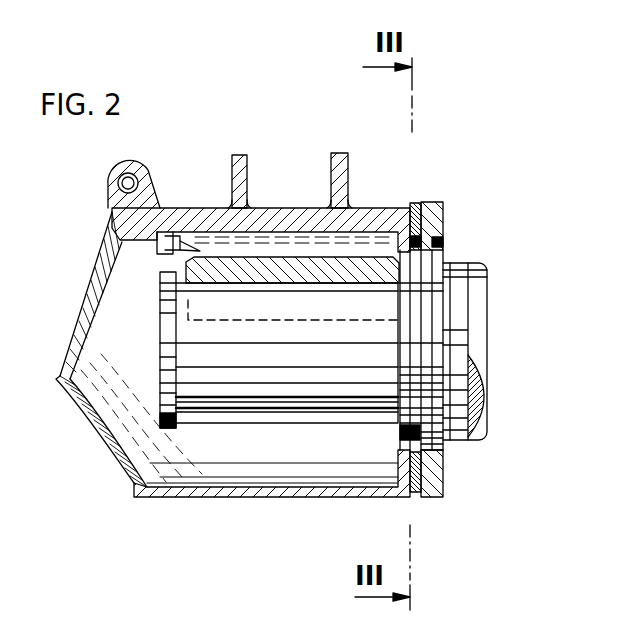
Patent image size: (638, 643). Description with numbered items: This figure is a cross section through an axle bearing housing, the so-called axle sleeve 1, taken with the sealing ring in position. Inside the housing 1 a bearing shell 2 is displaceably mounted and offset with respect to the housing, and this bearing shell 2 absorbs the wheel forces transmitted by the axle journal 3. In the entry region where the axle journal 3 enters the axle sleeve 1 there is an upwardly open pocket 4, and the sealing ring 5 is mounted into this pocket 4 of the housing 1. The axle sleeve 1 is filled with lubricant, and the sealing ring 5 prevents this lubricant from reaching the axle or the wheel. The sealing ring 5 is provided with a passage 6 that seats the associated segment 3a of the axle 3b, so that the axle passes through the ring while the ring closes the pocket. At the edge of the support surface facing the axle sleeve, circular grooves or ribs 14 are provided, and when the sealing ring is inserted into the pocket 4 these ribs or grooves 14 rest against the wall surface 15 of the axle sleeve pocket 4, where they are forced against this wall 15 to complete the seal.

The axle sleeve 1 is at (187, 205).
The bearing shell 2 is at (268, 260).
The axle journal 3 is at (288, 405).
The segment of axle 3a is at (443, 352).
The axle 3b is at (452, 318).
The pocket 4 is at (426, 205).
The sealing ring 5 is at (438, 250).
The passage 6 is at (445, 283).
The circular grooves or ribs 14 is at (404, 210).
The wall surface 15 is at (422, 442).